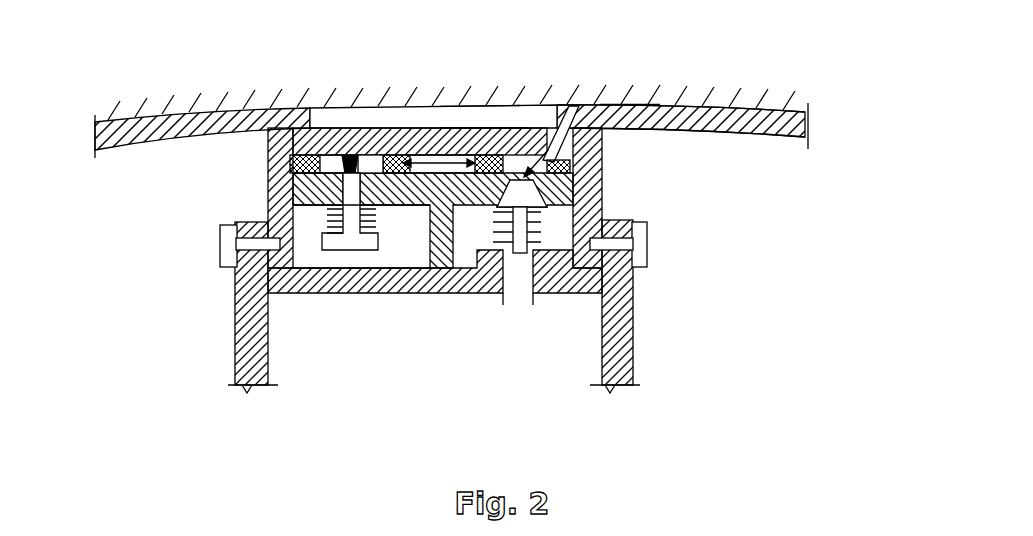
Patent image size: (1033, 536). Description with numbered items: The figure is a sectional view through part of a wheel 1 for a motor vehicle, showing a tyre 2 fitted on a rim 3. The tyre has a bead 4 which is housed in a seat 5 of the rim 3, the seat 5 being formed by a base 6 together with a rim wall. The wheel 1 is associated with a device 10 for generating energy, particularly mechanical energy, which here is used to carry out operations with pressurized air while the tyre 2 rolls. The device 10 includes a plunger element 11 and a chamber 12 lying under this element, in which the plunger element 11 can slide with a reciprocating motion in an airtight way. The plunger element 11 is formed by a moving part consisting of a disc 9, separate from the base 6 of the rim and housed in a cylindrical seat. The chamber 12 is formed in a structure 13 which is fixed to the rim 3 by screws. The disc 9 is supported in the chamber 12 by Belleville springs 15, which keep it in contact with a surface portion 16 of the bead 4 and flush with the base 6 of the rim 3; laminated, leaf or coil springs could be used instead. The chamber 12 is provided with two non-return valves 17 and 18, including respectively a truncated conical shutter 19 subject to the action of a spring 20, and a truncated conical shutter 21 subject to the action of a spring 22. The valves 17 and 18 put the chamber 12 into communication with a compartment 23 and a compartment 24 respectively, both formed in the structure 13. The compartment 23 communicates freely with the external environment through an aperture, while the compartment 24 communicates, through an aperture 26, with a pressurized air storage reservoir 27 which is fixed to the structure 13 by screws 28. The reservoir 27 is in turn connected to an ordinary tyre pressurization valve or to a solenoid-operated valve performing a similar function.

The wheel 1 is at (663, 72).
The tyre 2 is at (790, 100).
The rim 3 is at (718, 141).
The bead 4 is at (760, 108).
The seat 5 is at (693, 98).
The base 6 is at (632, 103).
The disc 9 is at (378, 118).
The device for generating energy 10 is at (493, 117).
The plunger element 11 is at (440, 117).
The chamber 12 is at (267, 132).
The structure 13 is at (603, 186).
The Belleville springs 15 is at (267, 174).
The surface portion 16 is at (482, 104).
The non-return valve 17 is at (345, 153).
The non-return valve 18 is at (558, 130).
The truncated conical shutter 19 is at (372, 195).
The spring 20 is at (378, 231).
The truncated conical shutter 21 is at (507, 211).
The spring 22 is at (480, 252).
The compartment 23 is at (237, 300).
The compartment 24 is at (603, 206).
The aperture 26 is at (520, 275).
The pressurized air storage reservoir 27 is at (490, 358).
The screws 28 is at (220, 232).